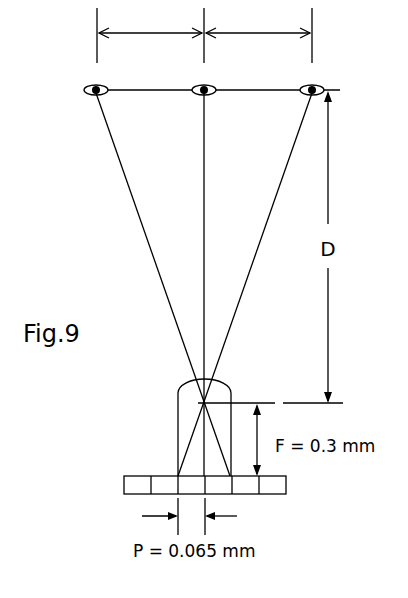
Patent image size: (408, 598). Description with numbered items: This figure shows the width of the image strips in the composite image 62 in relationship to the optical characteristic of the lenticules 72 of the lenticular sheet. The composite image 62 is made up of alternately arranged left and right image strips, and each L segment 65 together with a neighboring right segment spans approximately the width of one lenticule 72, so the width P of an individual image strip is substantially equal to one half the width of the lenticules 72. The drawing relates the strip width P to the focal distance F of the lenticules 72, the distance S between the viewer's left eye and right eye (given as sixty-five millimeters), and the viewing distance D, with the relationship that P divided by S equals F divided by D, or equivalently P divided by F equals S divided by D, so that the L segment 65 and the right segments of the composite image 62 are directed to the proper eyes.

The lenticules 72 is at (225, 392).
The composite image 62 is at (287, 480).
The L segment 65 is at (204, 48).